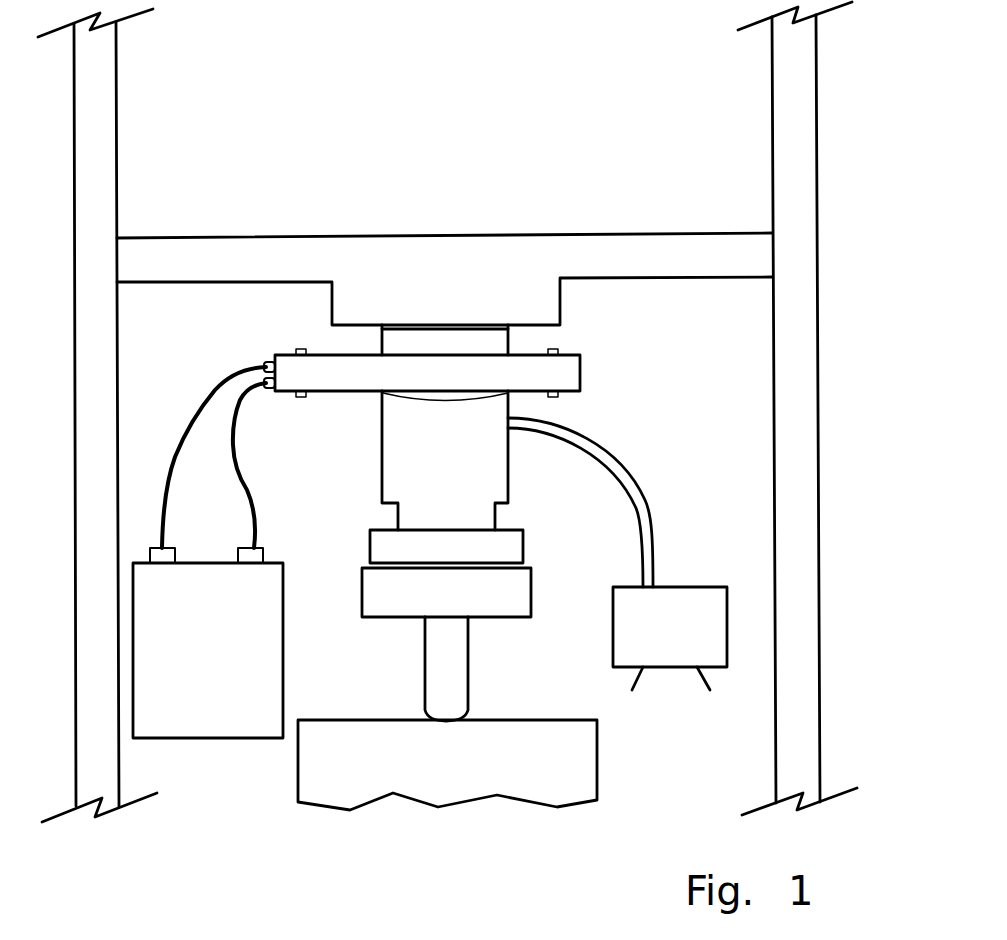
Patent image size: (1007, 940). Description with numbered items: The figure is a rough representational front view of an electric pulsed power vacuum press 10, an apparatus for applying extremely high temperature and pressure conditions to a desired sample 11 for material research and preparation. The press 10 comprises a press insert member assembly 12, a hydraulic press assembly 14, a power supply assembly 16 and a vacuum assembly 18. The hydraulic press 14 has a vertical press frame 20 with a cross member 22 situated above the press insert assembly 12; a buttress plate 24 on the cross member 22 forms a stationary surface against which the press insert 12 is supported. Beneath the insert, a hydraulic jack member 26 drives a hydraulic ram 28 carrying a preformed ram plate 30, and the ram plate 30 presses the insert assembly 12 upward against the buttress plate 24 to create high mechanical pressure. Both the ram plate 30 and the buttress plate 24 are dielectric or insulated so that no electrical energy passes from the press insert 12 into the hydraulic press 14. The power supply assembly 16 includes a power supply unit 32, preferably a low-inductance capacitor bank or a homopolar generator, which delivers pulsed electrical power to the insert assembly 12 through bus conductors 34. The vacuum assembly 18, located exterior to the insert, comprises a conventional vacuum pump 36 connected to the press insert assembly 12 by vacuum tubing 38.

The electric pulsed power vacuum press 10 is at (553, 127).
The sample 11 is at (475, 473).
The press insert member assembly 12 is at (630, 440).
The hydraulic press assembly 14 is at (828, 252).
The power supply assembly 16 is at (313, 530).
The vacuum assembly 18 is at (728, 557).
The vertical press frame 20 is at (800, 108).
The cross member 22 is at (237, 253).
The buttress plate 24 is at (348, 307).
The hydraulic jack member 26 is at (554, 777).
The hydraulic ram 28 is at (462, 680).
The ram plate 30 is at (507, 612).
The power supply unit 32 is at (224, 666).
The bus conductors 34 is at (247, 490).
The vacuum pump 36 is at (685, 645).
The vacuum tubing 38 is at (638, 478).